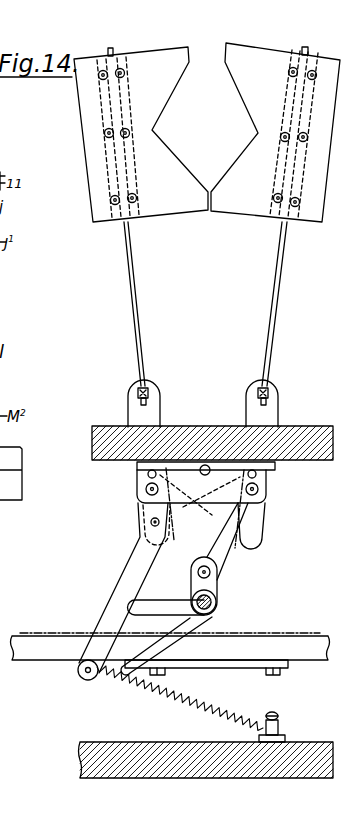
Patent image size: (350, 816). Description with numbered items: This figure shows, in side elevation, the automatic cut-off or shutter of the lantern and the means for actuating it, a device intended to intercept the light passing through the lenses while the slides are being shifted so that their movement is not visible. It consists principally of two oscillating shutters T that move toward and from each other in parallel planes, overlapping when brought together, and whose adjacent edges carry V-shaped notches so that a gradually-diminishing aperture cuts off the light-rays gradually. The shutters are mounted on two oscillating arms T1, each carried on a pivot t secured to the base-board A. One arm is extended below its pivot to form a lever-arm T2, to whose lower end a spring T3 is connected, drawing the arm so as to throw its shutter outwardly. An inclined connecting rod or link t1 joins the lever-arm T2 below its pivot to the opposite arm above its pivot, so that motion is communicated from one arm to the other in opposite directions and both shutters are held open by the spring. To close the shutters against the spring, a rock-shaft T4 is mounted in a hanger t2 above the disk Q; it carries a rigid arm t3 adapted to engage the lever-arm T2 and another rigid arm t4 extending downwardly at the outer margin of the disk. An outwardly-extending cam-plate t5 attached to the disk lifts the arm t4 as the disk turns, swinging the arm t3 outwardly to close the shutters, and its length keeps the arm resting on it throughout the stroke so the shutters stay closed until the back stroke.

The oscillating shutter T is at (207, 132).
The oscillating arm T1 is at (140, 320).
The lever-arm T2 is at (122, 584).
The spring T3 is at (160, 731).
The rock-shaft T4 is at (216, 603).
The pivot t is at (146, 487).
The inclined connecting rod or link t1 is at (185, 504).
The hanger t2 is at (223, 565).
The rigid arm t3 is at (192, 592).
The rigid arm t4 is at (160, 651).
The cam-plate t5 is at (222, 662).
The base-board A is at (311, 433).
The vertical shaft / disk Q is at (170, 647).